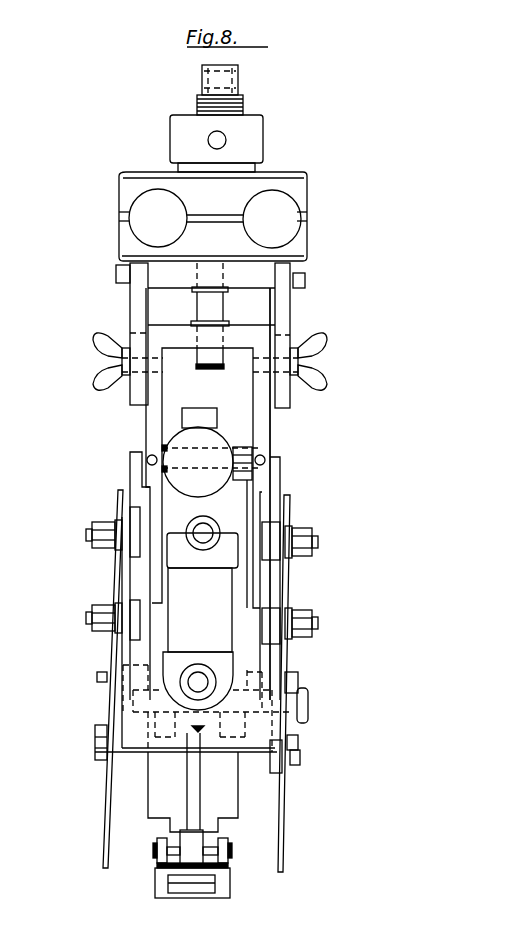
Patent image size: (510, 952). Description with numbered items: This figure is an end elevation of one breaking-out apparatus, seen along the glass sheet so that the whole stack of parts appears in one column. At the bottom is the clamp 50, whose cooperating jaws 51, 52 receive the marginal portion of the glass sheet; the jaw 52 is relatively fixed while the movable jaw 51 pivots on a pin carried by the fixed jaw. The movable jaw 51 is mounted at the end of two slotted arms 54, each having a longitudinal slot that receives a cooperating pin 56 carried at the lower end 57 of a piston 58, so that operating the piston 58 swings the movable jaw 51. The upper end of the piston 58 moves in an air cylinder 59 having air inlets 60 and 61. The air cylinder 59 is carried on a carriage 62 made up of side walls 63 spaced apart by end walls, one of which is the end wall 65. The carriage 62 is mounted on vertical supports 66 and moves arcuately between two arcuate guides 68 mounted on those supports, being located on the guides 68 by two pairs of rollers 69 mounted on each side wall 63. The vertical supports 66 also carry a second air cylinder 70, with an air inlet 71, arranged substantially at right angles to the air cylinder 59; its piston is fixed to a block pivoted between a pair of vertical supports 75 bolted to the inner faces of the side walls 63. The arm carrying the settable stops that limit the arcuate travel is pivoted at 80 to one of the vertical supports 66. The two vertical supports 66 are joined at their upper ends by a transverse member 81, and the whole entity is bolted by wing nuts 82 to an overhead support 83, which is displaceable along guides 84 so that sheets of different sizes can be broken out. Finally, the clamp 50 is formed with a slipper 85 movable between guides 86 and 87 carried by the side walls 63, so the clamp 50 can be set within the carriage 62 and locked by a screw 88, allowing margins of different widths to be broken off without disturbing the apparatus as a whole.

The clamp 50 is at (235, 818).
The movable jaw 51 is at (222, 890).
The fixed jaw 52 is at (205, 866).
The slotted arms 54 is at (155, 853).
The pin 56 is at (232, 855).
The lower end of piston 57 is at (197, 843).
The piston 58 is at (195, 790).
The air cylinder 59 is at (212, 627).
The air inlet 60 is at (200, 532).
The air inlet 61 is at (202, 682).
The carriage 62 is at (181, 518).
The side walls 63 is at (283, 656).
The end wall 65 is at (298, 745).
The vertical supports 66 is at (146, 432).
The arcuate guides 68 is at (140, 575).
The rollers 69 is at (137, 523).
The second air cylinder 70 is at (186, 462).
The air inlet 71 is at (196, 420).
The vertical supports 75 is at (135, 472).
The pivot 80 is at (262, 462).
The transverse member 81 is at (248, 336).
The wing nuts 82 is at (97, 340).
The overhead support 83 is at (135, 302).
The guides 84 is at (140, 208).
The slipper 85 is at (298, 692).
The guide 86 is at (131, 680).
The guide 87 is at (160, 730).
The screw 88 is at (308, 718).